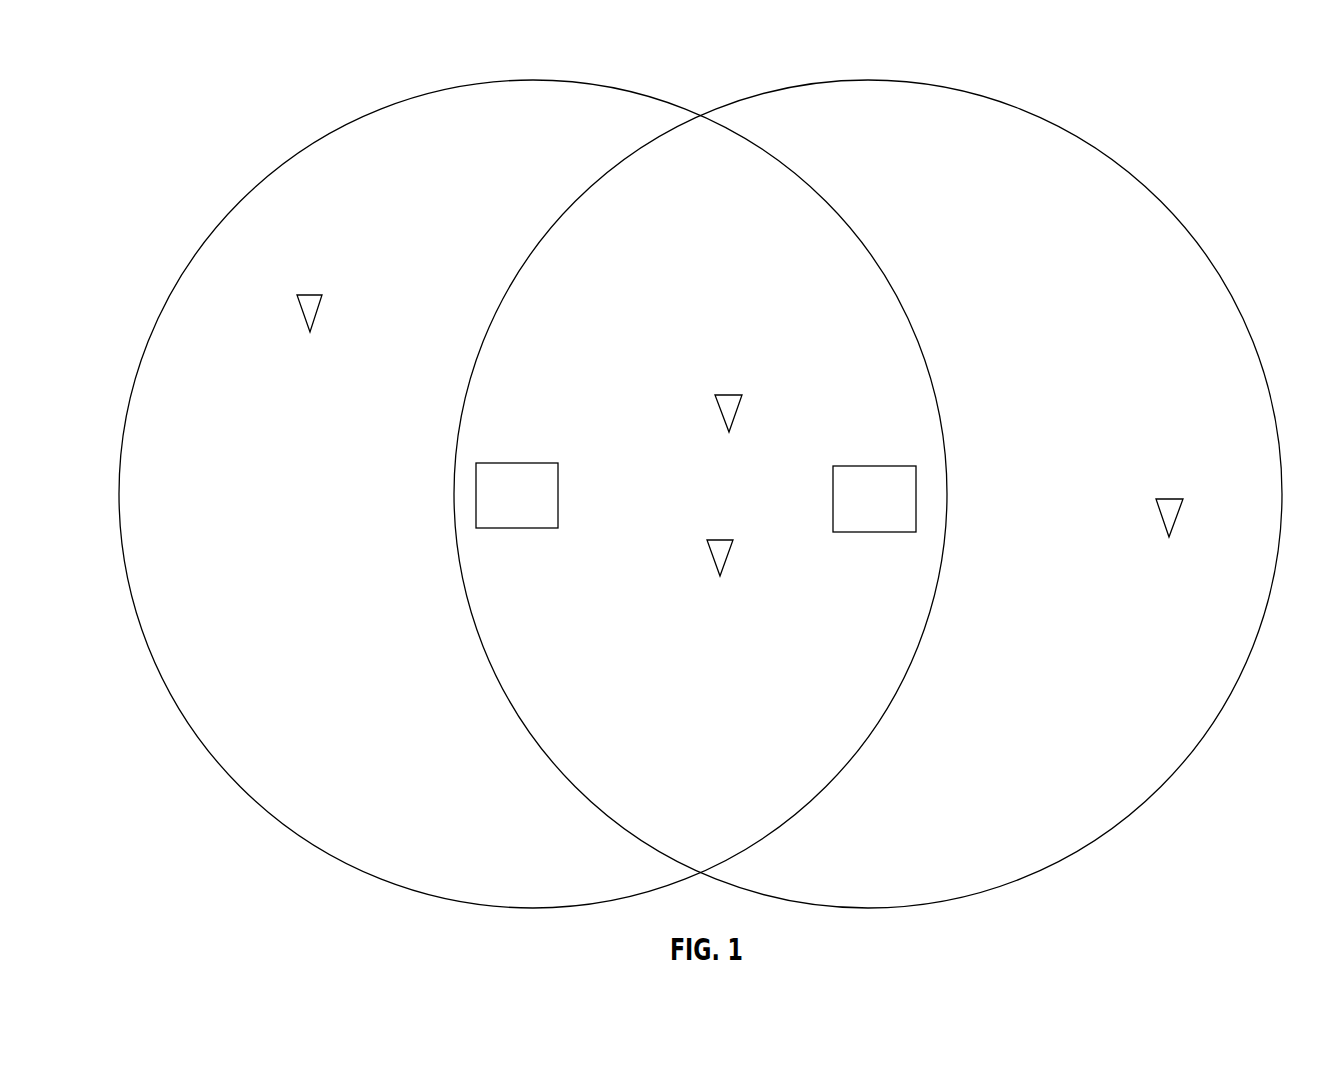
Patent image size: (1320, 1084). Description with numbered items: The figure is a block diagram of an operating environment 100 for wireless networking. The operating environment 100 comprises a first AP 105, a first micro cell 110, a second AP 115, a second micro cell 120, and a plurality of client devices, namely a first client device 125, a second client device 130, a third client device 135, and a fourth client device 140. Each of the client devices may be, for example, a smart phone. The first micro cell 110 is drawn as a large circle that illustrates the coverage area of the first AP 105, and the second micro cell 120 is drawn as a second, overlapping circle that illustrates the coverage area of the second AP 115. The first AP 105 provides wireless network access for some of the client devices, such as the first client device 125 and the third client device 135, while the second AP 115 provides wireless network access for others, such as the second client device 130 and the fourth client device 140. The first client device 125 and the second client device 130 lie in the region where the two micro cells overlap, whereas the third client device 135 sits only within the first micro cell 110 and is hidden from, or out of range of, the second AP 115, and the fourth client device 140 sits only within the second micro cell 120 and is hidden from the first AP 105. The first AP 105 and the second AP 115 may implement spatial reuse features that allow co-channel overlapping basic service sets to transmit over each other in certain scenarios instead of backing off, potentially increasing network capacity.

The operating environment 100 is at (1108, 77).
The first AP 105 is at (513, 462).
The first micro cell 110 is at (753, 142).
The second AP 115 is at (872, 465).
The second micro cell 120 is at (1100, 153).
The first client device 125 is at (721, 412).
The second client device 130 is at (716, 556).
The third client device 135 is at (304, 314).
The fourth client device 140 is at (1165, 516).